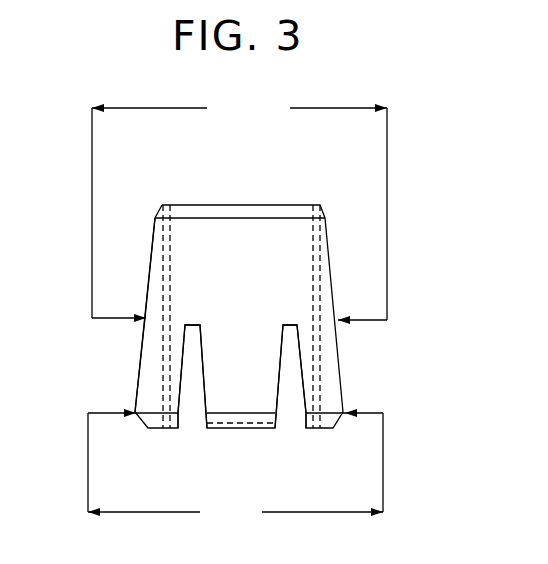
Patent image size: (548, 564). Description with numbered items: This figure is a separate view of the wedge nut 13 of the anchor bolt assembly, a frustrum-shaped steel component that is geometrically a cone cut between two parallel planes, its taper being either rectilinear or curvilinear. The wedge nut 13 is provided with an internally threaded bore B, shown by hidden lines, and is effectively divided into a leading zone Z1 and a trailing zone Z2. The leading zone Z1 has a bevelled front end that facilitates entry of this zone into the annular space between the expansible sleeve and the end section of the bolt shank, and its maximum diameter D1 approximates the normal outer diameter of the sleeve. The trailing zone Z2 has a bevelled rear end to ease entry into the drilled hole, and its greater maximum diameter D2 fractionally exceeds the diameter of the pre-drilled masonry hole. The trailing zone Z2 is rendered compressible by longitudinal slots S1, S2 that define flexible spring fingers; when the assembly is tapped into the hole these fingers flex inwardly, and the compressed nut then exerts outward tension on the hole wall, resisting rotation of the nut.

The wedge nut 13 is at (236, 296).
The internally threaded bore B is at (172, 240).
The leading zone Z1 is at (195, 257).
The trailing zone Z2 is at (160, 360).
The longitudinal slot S1 is at (197, 368).
The longitudinal slot S2 is at (293, 375).
The maximum diameter of the leading zone D1 is at (239, 209).
The maximum diameter of the trailing zone D2 is at (235, 467).